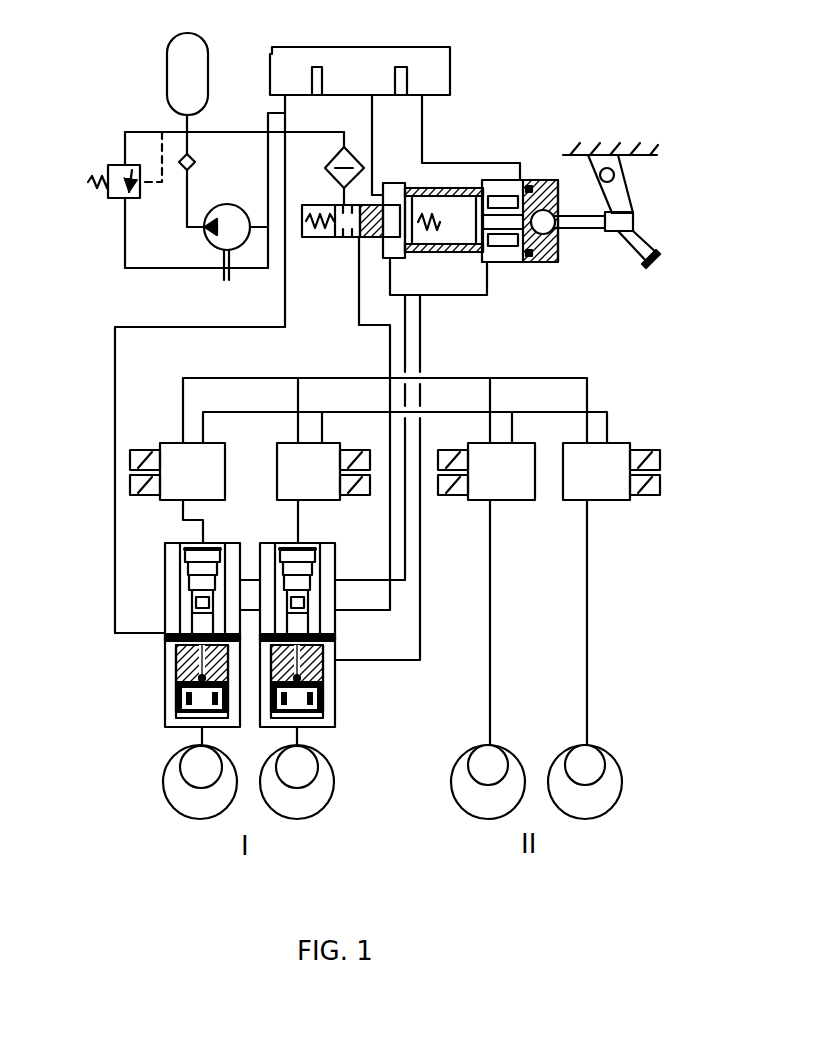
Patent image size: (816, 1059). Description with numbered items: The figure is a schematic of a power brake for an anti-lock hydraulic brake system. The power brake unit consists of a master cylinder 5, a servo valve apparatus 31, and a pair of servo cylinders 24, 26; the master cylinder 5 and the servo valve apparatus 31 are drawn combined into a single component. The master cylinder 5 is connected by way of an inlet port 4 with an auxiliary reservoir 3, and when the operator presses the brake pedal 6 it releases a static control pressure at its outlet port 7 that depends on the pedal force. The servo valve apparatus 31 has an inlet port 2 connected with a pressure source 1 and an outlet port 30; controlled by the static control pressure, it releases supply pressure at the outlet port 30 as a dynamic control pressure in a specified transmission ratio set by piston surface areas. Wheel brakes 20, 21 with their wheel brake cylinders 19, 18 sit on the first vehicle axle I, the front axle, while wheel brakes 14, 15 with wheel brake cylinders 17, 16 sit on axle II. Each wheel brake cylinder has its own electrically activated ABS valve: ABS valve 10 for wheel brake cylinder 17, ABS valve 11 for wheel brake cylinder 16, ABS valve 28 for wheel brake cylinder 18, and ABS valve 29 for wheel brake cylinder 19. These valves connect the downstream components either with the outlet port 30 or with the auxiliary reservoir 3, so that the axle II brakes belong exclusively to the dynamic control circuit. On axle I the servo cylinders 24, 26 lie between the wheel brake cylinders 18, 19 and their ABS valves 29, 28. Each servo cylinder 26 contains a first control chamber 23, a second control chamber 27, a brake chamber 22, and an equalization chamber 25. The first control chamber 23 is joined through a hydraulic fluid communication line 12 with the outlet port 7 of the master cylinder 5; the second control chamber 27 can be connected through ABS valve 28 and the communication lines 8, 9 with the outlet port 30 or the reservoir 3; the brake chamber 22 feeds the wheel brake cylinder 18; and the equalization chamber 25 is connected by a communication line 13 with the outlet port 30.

The pressure source 1 is at (108, 146).
The inlet port 2 is at (338, 200).
The auxiliary reservoir 3 is at (468, 68).
The inlet port 4 is at (520, 178).
The master cylinder 5 is at (546, 160).
The brake pedal 6 is at (640, 218).
The outlet port 7 is at (490, 262).
The hydraulic fluid communication line 8 is at (322, 372).
The hydraulic fluid communication line 9 is at (343, 412).
The ABS valve 10 is at (545, 455).
The ABS valve 11 is at (672, 470).
The hydraulic fluid communication line 12 is at (420, 557).
The hydraulic fluid communication line 13 is at (390, 602).
The wheel brake 14 is at (521, 745).
The wheel brake 15 is at (620, 750).
The wheel brake cylinder 16 is at (585, 766).
The wheel brake cylinder 17 is at (488, 766).
The wheel brake cylinder 18 is at (200, 766).
The wheel brake cylinder 19 is at (297, 766).
The wheel brake 20 is at (252, 797).
The wheel brake 21 is at (155, 782).
The brake chamber 22 is at (183, 688).
The first control chamber 23 is at (183, 653).
The servo cylinder 24 is at (193, 618).
The equalization chamber 25 is at (187, 604).
The servo cylinder 26 is at (158, 583).
The second control chamber 27 is at (190, 544).
The ABS valve 28 is at (124, 466).
The ABS valve 29 is at (262, 440).
The outlet port 30 is at (357, 238).
The servo valve apparatus 31 is at (296, 238).